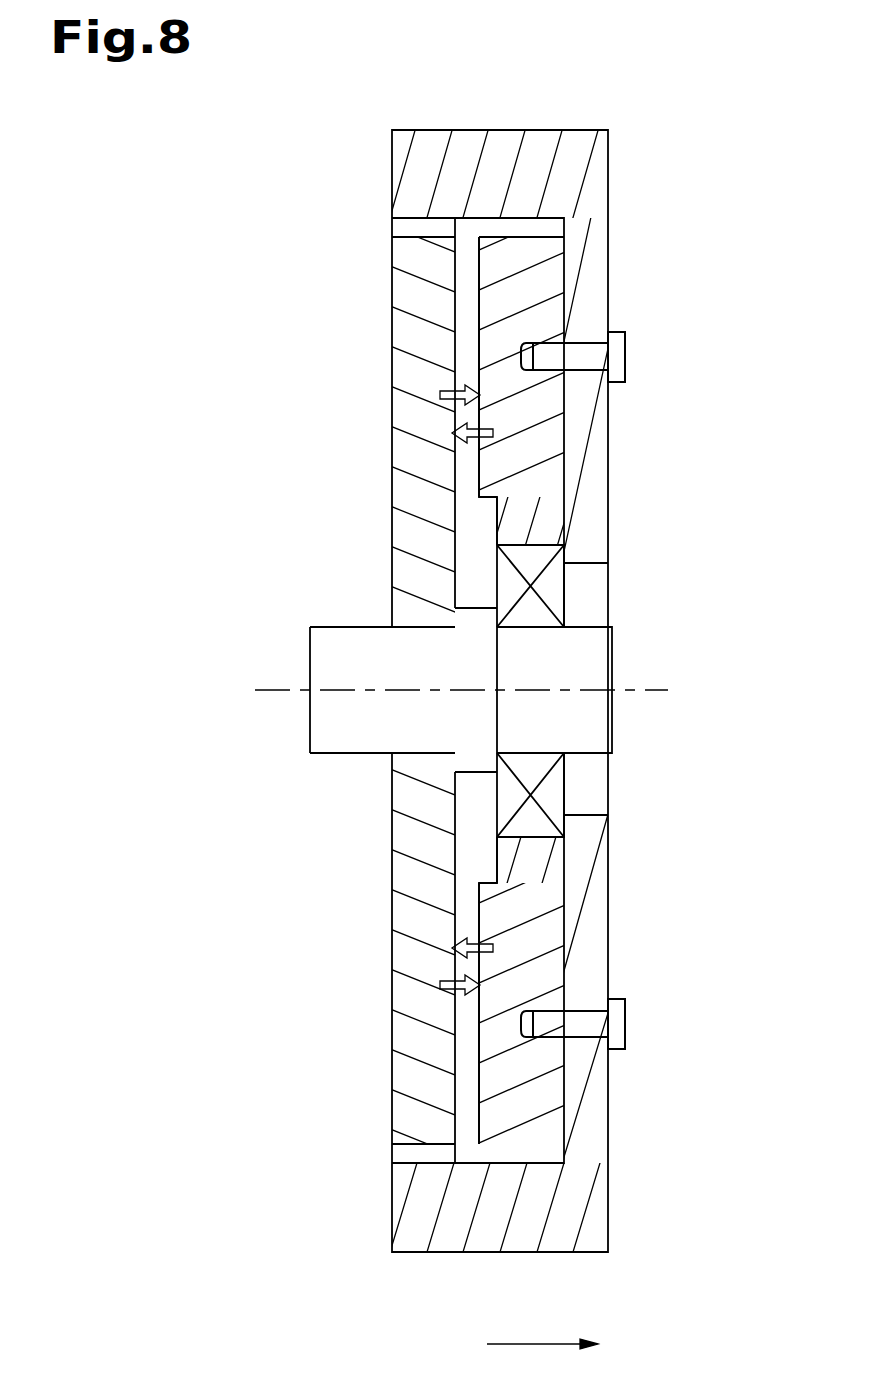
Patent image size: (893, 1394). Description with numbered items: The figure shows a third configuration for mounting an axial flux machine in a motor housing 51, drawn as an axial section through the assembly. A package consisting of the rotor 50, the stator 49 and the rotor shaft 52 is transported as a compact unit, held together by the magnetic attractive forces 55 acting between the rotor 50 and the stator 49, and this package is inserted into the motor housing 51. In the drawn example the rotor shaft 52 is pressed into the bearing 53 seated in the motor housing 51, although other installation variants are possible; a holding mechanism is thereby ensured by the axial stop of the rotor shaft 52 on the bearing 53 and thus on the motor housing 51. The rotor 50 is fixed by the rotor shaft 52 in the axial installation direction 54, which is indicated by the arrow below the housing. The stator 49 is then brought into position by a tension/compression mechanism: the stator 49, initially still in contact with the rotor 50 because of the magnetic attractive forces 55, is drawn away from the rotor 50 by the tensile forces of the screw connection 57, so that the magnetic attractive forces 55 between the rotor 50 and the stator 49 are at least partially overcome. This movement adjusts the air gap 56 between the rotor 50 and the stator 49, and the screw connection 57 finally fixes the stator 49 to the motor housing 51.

The stator 49 is at (548, 272).
The rotor 50 is at (422, 266).
The motor housing 51 is at (500, 168).
The rotor shaft 52 is at (583, 660).
The bearing 53 is at (552, 802).
The axial installation direction 54 is at (544, 1342).
The magnetic attractive forces 55 is at (441, 393).
The air gap 56 is at (465, 1143).
The screw connection 57 is at (613, 357).